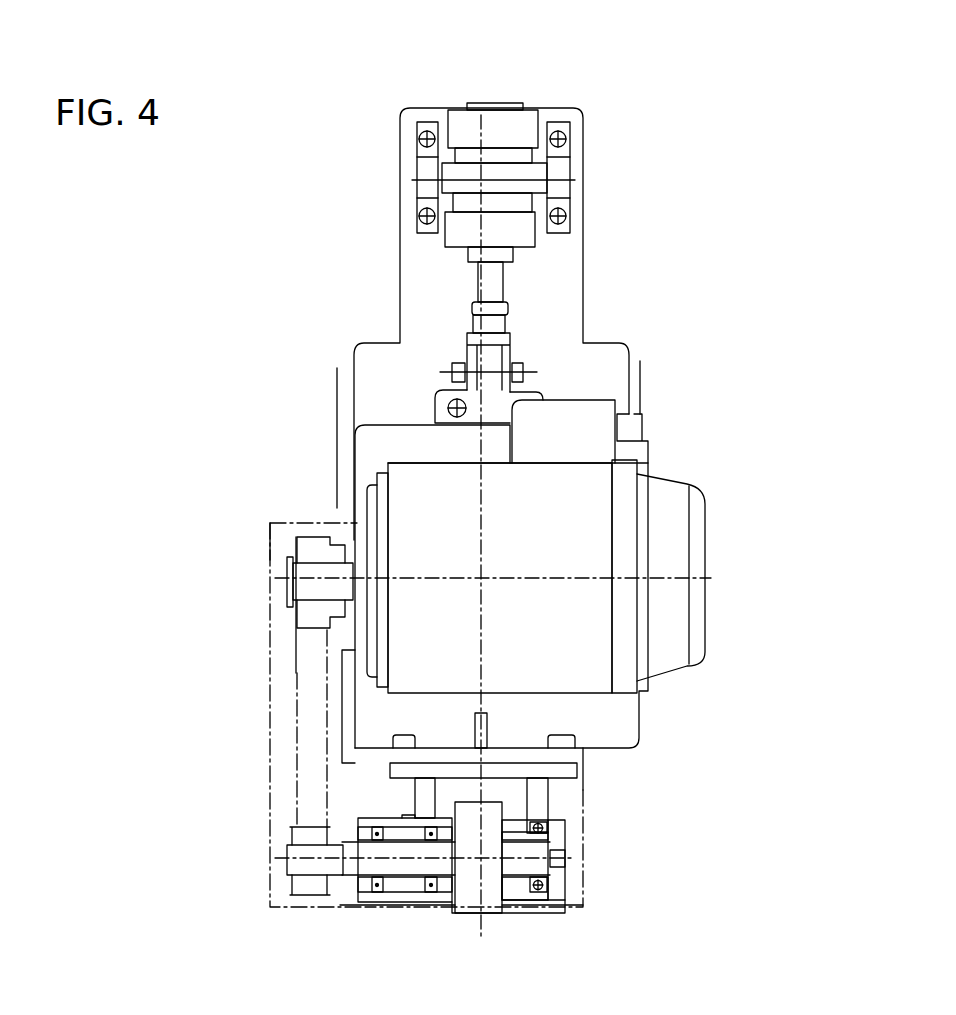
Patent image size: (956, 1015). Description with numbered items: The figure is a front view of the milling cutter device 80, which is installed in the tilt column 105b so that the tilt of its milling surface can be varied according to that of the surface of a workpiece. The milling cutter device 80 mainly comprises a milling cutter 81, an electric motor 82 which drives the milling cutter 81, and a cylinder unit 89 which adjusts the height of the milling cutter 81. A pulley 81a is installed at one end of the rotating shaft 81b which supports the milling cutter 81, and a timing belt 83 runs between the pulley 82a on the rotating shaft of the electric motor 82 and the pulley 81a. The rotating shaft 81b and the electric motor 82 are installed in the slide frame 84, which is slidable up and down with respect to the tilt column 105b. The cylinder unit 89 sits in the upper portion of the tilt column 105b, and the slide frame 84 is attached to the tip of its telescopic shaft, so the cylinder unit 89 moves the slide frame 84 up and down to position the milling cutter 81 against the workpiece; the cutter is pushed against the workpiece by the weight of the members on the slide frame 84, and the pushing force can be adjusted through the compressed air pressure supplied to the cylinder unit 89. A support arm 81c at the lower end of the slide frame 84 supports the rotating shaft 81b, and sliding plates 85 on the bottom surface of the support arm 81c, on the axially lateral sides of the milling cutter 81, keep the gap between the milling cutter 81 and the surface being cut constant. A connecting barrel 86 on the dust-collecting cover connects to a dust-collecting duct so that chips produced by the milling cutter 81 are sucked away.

The milling cutter device 80 is at (629, 72).
The milling cutter 81 is at (500, 885).
The pulley 81a is at (300, 882).
The rotating shaft 81b is at (365, 863).
The support arm 81c is at (415, 797).
The electric motor 82 is at (674, 476).
The pulley 82a is at (307, 560).
The timing belt 83 is at (295, 670).
The slide frame 84 is at (621, 732).
The sliding plate 85 is at (427, 915).
The connecting barrel 86 is at (590, 800).
The cylinder unit 89 is at (475, 105).
The tilt column 105b is at (580, 272).